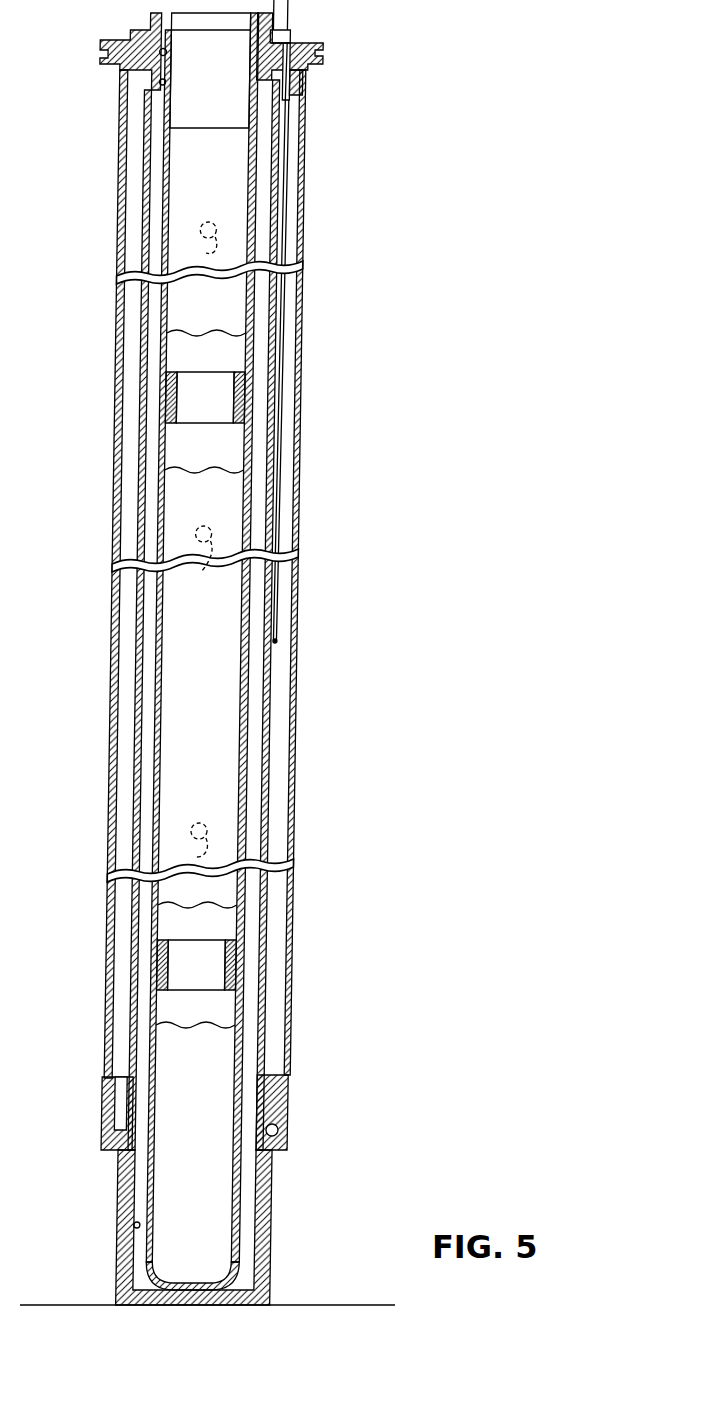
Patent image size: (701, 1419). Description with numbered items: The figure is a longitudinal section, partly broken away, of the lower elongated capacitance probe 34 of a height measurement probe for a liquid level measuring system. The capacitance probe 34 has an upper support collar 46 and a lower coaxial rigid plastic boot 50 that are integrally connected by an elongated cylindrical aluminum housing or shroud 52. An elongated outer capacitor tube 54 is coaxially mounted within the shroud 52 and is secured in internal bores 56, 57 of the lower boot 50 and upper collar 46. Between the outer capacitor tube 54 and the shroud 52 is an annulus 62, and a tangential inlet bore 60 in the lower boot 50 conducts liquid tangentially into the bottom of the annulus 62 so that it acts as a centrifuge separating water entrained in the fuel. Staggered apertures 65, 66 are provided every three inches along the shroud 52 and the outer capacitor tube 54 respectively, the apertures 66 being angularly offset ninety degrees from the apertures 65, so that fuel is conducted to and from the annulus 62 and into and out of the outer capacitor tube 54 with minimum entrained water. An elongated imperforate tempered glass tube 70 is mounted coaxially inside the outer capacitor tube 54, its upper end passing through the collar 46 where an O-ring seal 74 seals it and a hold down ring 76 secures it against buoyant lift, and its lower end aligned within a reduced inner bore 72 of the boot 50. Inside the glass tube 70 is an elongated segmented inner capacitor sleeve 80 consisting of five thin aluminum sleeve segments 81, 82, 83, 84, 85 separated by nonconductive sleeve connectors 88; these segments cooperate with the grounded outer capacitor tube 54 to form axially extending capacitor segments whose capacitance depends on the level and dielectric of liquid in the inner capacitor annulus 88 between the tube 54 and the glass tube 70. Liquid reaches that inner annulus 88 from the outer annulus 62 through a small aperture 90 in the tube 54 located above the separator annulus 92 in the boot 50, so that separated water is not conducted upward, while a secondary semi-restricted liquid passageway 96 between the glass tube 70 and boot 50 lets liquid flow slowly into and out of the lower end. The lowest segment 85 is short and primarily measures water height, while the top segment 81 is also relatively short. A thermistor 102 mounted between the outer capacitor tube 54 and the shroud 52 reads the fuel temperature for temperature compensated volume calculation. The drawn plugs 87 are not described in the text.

The capacitance probe 34 is at (306, 296).
The upper support collar 46 is at (320, 43).
The lower boot 50 is at (301, 1115).
The housing or shroud 52 is at (304, 730).
The outer capacitor tube 54 is at (142, 722).
The internal bore 56 is at (150, 1224).
The internal bore 57 is at (160, 88).
The tangential inlet bore 60 is at (291, 1137).
The annulus 62 is at (287, 682).
The aperture 65 is at (117, 232).
The aperture 66 is at (203, 250).
The glass tube 70 is at (164, 793).
The reduced inner bore 72 is at (168, 1280).
The O-ring seal 74 is at (286, 40).
The hold down ring 76 is at (146, 26).
The inner capacitor sleeve 80 is at (204, 150).
The sleeve segment 81 is at (217, 206).
The sleeve segment 82 is at (219, 311).
The sleeve segment 83 is at (215, 519).
The sleeve segment 84 is at (216, 761).
The sleeve segment 85 is at (219, 1084).
The plug 87 is at (226, 427).
The inner capacitor annulus 88 is at (261, 785).
The aperture 90 is at (275, 1048).
The separator annulus 92 is at (290, 1072).
The secondary semi-restricted liquid passageway 96 is at (253, 1290).
The thermistor 102 is at (280, 605).